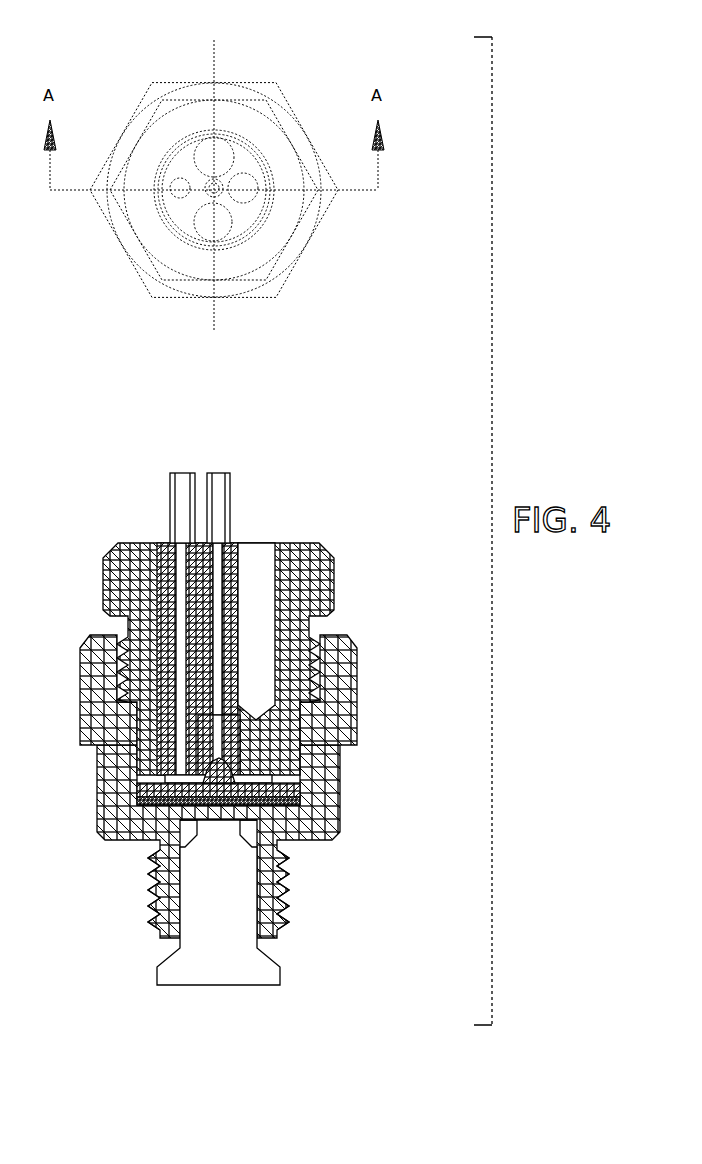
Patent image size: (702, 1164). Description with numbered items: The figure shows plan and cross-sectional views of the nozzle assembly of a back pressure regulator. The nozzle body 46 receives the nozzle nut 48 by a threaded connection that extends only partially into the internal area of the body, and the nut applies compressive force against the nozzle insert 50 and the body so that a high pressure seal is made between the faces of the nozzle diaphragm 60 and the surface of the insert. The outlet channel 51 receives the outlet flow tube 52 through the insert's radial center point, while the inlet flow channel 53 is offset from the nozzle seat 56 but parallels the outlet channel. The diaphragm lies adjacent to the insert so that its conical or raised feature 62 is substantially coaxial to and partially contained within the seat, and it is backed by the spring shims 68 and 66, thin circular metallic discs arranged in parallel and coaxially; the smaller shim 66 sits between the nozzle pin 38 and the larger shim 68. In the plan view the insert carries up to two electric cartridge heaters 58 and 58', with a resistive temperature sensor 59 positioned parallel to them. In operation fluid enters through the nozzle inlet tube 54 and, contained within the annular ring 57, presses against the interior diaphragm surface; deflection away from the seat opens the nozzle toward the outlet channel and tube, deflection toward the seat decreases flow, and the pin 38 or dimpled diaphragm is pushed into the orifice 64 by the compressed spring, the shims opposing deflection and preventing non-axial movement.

The nozzle pin 38 is at (278, 975).
The nozzle body 46 is at (148, 88).
The nozzle nut 48 is at (173, 100).
The nozzle insert 50 is at (280, 148).
The outlet channel 51 is at (224, 192).
The outlet flow tube 52 is at (220, 473).
The inlet flow channel 53 is at (173, 192).
The nozzle inlet tube 54 is at (182, 473).
The nozzle seat 56 is at (212, 186).
The annular ring 57 is at (177, 235).
The electric cartridge heater 58 is at (300, 446).
The heating element 58' is at (232, 272).
The resistive temperature sensor 59 is at (218, 152).
The nozzle diaphragm 60 is at (307, 793).
The raised feature 62 is at (288, 843).
The orifice 64 is at (215, 758).
The spring shim 66 is at (143, 838).
The spring shim 68 is at (120, 830).